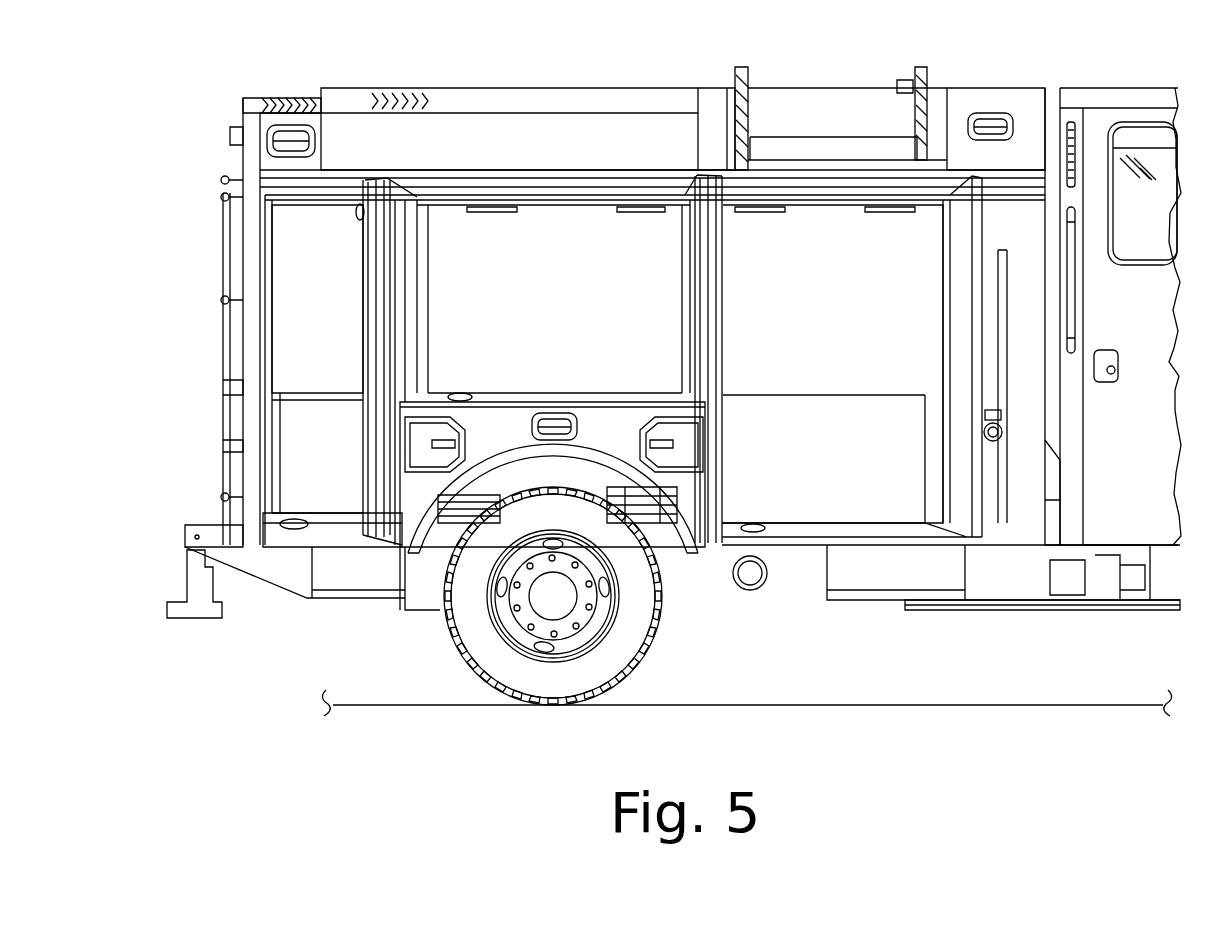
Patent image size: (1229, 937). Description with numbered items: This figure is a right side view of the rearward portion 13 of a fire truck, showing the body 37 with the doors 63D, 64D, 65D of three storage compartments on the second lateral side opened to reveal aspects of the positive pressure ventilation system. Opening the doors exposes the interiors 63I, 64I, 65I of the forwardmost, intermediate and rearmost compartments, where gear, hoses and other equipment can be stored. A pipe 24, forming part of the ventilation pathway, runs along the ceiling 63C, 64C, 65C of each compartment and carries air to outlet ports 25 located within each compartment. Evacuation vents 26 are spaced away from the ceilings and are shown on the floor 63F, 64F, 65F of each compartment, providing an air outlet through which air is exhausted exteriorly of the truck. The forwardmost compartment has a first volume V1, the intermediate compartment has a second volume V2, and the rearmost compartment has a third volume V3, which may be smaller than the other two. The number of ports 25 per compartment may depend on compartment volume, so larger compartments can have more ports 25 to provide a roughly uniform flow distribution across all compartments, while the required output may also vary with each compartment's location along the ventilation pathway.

The rearward portion 13 is at (190, 356).
The pipe 24 is at (363, 227).
The outlet port 25 is at (357, 212).
The evacuation vent 26 is at (462, 393).
The body 37 is at (651, 88).
The ceiling of forwardmost storage compartment 63C is at (900, 203).
The door of forwardmost storage compartment 63D is at (963, 247).
The floor of forwardmost storage compartment 63F is at (848, 527).
The interior of forwardmost storage compartment 63I is at (817, 313).
The ceiling of intermediate storage compartment 64C is at (547, 197).
The door of intermediate storage compartment 64D is at (690, 195).
The floor of intermediate storage compartment 64F is at (572, 393).
The interior of intermediate storage compartment 64I is at (552, 319).
The ceiling of rearmost storage compartment 65C is at (293, 203).
The door of rearmost storage compartment 65D is at (370, 287).
The floor of rearmost storage compartment 65F is at (298, 515).
The interior of rearmost storage compartment 65I is at (318, 319).
The first volume V1 is at (797, 500).
The second volume V2 is at (524, 367).
The third volume V3 is at (335, 480).